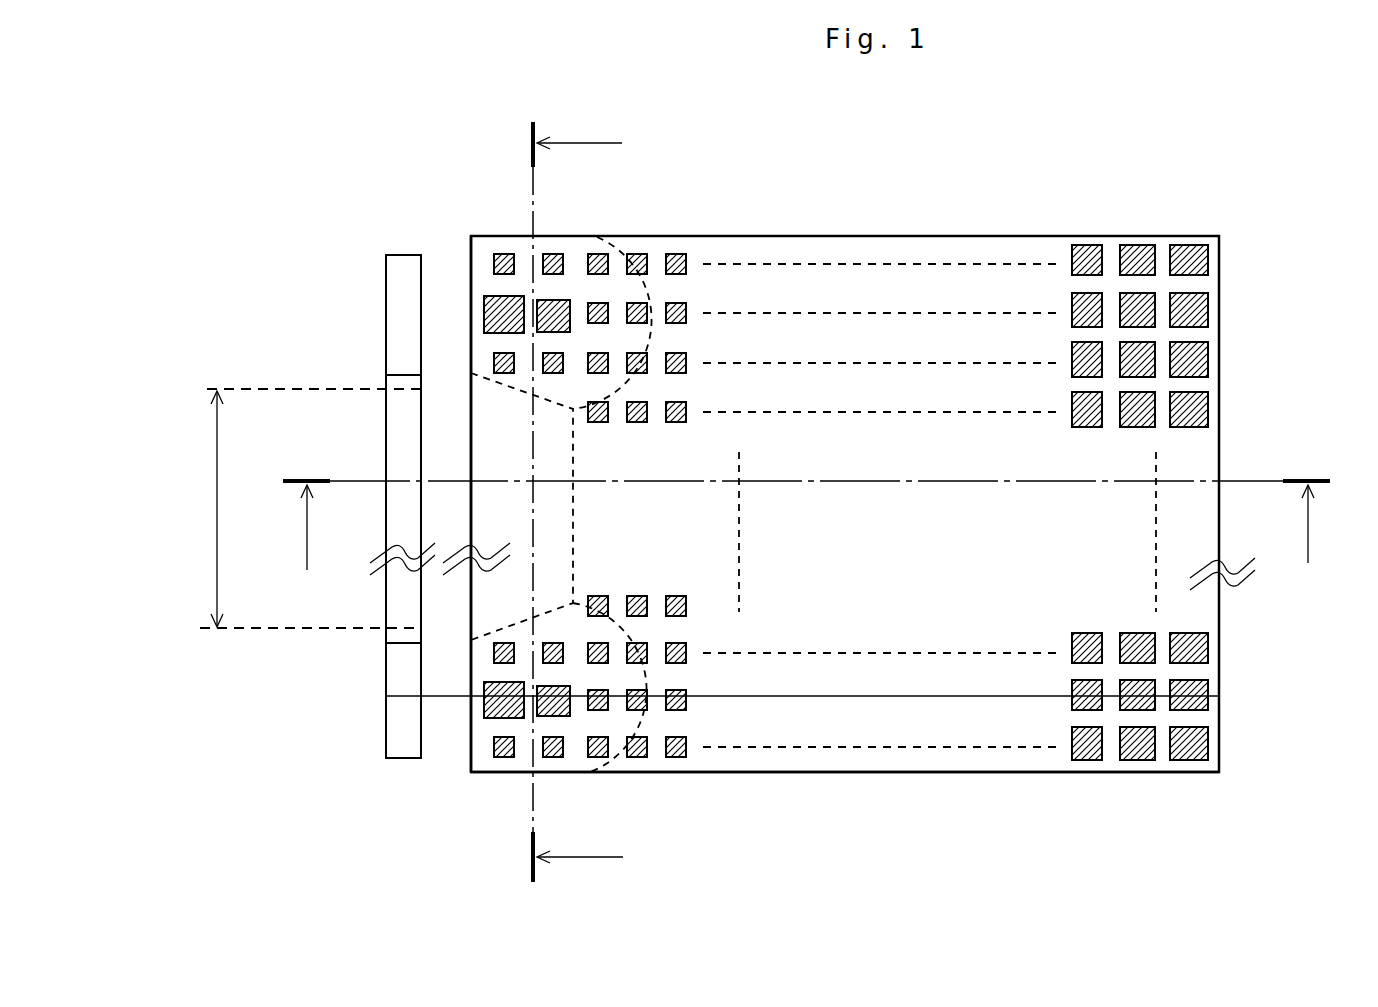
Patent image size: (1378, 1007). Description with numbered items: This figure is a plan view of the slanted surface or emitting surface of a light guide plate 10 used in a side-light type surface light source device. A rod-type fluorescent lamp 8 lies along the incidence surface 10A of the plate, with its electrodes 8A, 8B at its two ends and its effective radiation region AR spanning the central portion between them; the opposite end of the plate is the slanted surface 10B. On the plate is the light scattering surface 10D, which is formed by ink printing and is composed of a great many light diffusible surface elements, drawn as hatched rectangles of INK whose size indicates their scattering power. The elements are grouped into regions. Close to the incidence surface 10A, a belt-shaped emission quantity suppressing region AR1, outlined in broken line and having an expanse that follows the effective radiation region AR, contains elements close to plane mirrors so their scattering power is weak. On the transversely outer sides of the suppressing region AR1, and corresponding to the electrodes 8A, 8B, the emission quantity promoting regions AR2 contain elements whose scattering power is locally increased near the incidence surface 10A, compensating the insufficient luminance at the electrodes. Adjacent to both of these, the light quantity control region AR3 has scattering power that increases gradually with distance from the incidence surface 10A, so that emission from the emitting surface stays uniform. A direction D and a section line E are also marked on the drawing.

The light guide plate 10 is at (913, 199).
The incidence surface 10A is at (468, 270).
The slanted surface 10B is at (750, 758).
The light scattering surface 10D is at (935, 757).
The ink INK is at (1205, 272).
The fluorescent lamp 8 is at (402, 762).
The electrode 8A is at (400, 277).
The electrode 8B is at (400, 722).
The emission quantity suppressing region AR1 is at (552, 545).
The emission quantity promoting region AR2 is at (613, 285).
The light quantity control region AR3 is at (1198, 463).
The effective radiation region AR is at (300, 508).
The direction D is at (817, 527).
The section line E is at (578, 501).